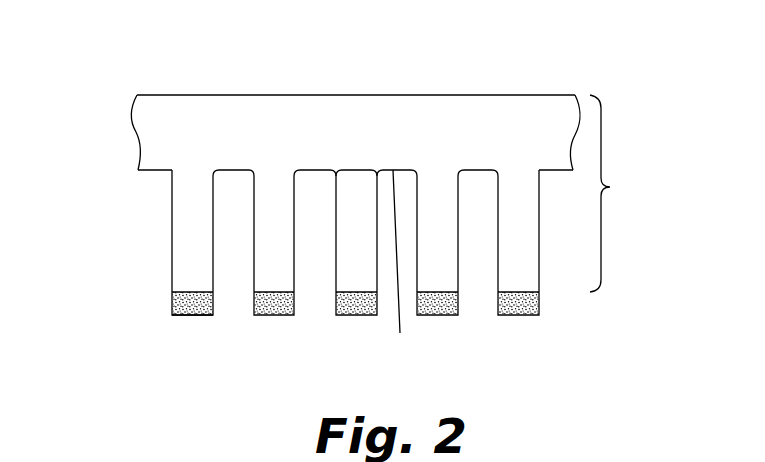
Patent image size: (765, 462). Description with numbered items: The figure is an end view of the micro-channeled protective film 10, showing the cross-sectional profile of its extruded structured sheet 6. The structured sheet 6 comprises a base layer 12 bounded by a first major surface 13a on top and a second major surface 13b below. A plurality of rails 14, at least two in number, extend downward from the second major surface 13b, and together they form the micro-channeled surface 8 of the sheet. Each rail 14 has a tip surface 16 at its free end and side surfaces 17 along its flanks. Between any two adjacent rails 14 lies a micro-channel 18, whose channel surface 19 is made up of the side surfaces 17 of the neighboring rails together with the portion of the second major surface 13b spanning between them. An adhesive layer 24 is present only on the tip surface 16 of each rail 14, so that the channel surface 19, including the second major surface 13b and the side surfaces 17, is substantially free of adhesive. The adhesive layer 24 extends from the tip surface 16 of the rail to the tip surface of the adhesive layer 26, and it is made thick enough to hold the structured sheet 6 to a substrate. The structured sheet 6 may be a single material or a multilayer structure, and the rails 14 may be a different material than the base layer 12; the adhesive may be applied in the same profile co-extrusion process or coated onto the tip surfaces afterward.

The protective film 10 is at (552, 60).
The structured sheet 6 is at (610, 193).
The base layer 12 is at (152, 145).
The first major surface 13a is at (155, 95).
The second major surface 13b is at (148, 172).
The rails 14 is at (184, 247).
The tip surface 16 is at (273, 296).
The side surfaces 17 is at (498, 261).
The micro-channels 18 is at (326, 307).
The channel surface 19 is at (417, 262).
The adhesive layer 24 is at (174, 305).
The tip surface of the adhesive layer 26 is at (532, 317).
The micro-channeled surface 8 is at (168, 331).